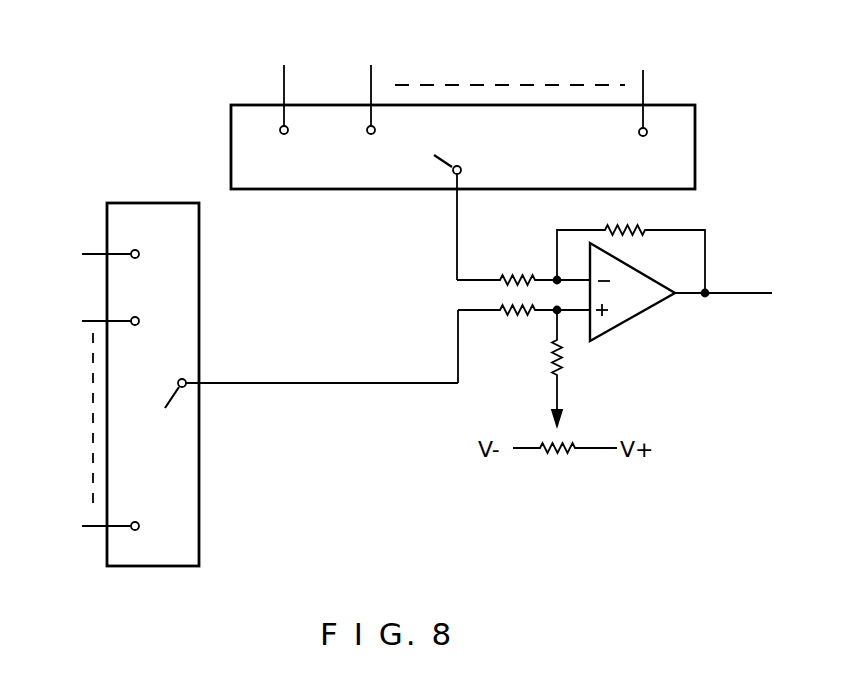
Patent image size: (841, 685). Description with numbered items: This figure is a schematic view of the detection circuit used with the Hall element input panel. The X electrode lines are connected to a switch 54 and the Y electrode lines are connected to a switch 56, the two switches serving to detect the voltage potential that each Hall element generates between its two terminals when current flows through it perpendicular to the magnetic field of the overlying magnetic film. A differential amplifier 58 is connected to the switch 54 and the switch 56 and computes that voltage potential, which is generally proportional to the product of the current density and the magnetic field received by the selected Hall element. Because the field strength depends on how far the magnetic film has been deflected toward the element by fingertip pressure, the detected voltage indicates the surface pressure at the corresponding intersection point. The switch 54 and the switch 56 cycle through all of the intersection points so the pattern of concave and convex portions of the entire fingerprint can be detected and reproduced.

The switch 54 is at (696, 120).
The switch 56 is at (123, 203).
The differential amplifier 58 is at (445, 258).